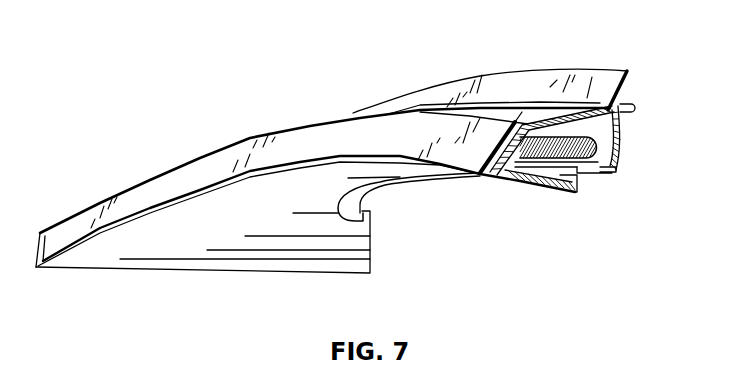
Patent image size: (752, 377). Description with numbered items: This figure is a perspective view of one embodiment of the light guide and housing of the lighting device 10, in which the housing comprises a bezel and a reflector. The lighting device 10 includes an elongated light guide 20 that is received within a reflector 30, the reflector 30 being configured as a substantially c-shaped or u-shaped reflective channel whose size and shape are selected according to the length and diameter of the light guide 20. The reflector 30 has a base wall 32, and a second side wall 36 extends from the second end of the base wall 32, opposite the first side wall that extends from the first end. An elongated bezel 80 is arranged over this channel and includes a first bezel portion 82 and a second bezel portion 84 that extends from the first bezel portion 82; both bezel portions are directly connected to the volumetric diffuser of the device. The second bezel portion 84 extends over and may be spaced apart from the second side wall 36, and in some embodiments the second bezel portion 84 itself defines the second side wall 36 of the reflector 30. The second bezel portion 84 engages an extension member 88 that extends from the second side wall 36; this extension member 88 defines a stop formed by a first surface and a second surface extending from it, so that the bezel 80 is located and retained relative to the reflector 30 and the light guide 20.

The lighting device 10 is at (492, 41).
The elongated light guide 20 is at (599, 127).
The reflector 30 is at (623, 148).
The base wall 32 is at (626, 123).
The second side wall 36 is at (617, 170).
The elongated bezel 80 is at (475, 191).
The first bezel portion 82 is at (544, 112).
The second bezel portion 84 is at (537, 191).
The extension member 88 is at (581, 176).